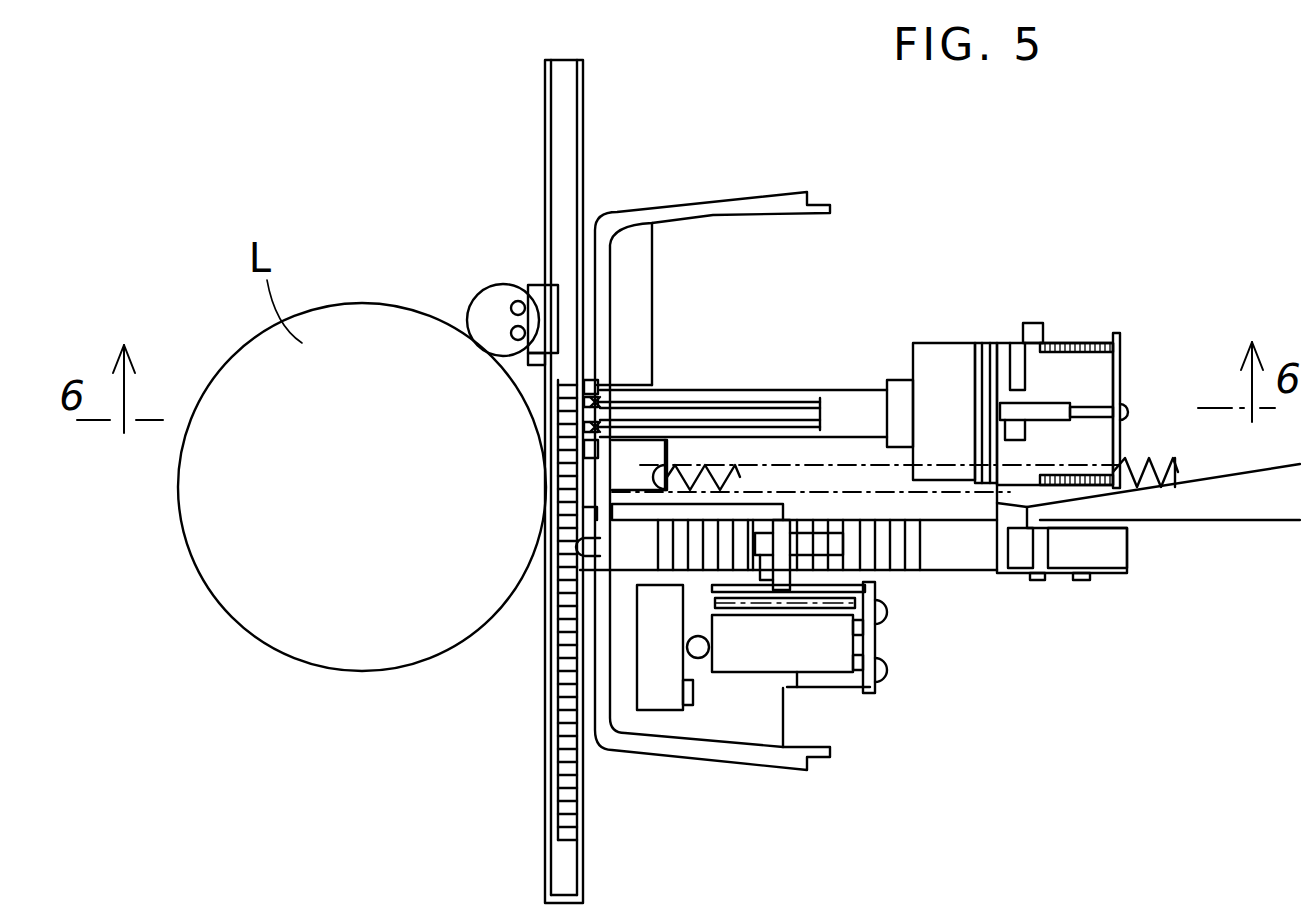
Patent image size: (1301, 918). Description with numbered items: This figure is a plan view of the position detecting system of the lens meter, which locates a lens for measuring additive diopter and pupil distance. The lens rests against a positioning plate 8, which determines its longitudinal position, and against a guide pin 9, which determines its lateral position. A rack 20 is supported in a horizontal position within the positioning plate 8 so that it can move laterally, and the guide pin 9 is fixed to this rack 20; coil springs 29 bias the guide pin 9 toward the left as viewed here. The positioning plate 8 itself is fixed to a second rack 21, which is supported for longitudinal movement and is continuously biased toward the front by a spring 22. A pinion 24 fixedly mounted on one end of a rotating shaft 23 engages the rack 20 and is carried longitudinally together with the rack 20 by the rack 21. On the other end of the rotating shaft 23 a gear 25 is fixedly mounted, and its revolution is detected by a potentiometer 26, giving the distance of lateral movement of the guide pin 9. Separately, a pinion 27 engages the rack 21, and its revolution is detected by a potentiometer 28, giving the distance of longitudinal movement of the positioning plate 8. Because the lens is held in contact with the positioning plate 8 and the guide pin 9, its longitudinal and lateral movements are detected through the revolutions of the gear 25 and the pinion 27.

The positioning plate 8 is at (556, 847).
The guide pin 9 is at (482, 303).
The rack 20 is at (568, 750).
The rack 21 is at (898, 553).
The spring 22 is at (852, 465).
The rotating shaft 23 is at (725, 413).
The pinion 24 is at (540, 290).
The gear 25 is at (1030, 325).
The potentiometer 26 is at (946, 355).
The pinion 27 is at (850, 550).
The potentiometer 28 is at (825, 653).
The coil springs 29 is at (1078, 335).